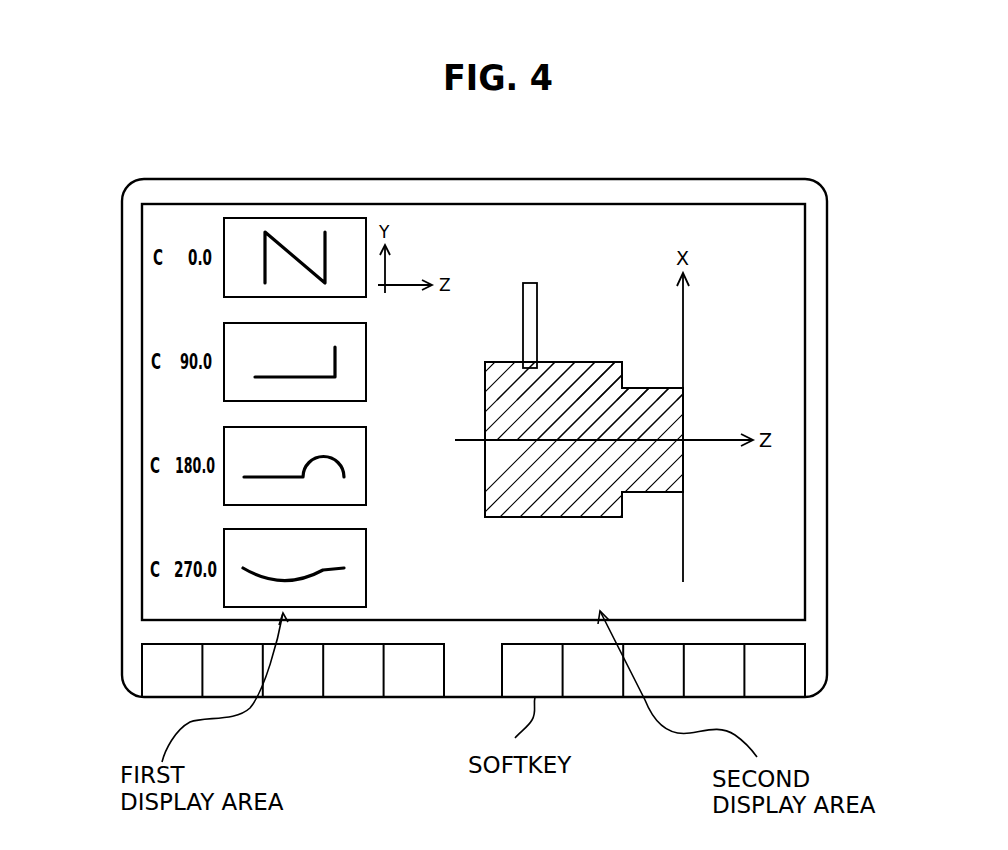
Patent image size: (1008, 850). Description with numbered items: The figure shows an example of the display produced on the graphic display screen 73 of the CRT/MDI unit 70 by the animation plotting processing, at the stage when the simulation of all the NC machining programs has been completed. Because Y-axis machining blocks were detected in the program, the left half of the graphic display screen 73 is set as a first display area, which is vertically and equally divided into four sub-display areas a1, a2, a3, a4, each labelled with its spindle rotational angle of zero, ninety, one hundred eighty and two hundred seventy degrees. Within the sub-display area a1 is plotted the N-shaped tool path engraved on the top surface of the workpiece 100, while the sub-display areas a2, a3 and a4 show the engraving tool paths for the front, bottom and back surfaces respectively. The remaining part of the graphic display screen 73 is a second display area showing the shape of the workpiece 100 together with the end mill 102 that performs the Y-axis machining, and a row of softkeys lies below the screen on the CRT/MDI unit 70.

The CRT/MDI unit 70 is at (816, 547).
The graphic display screen 73 is at (494, 258).
The workpiece 100 is at (532, 517).
The end mill 102 is at (530, 317).
The sub-display area a1 is at (190, 287).
The sub-display area a2 is at (190, 390).
The sub-display area a3 is at (190, 493).
The sub-display area a4 is at (190, 597).